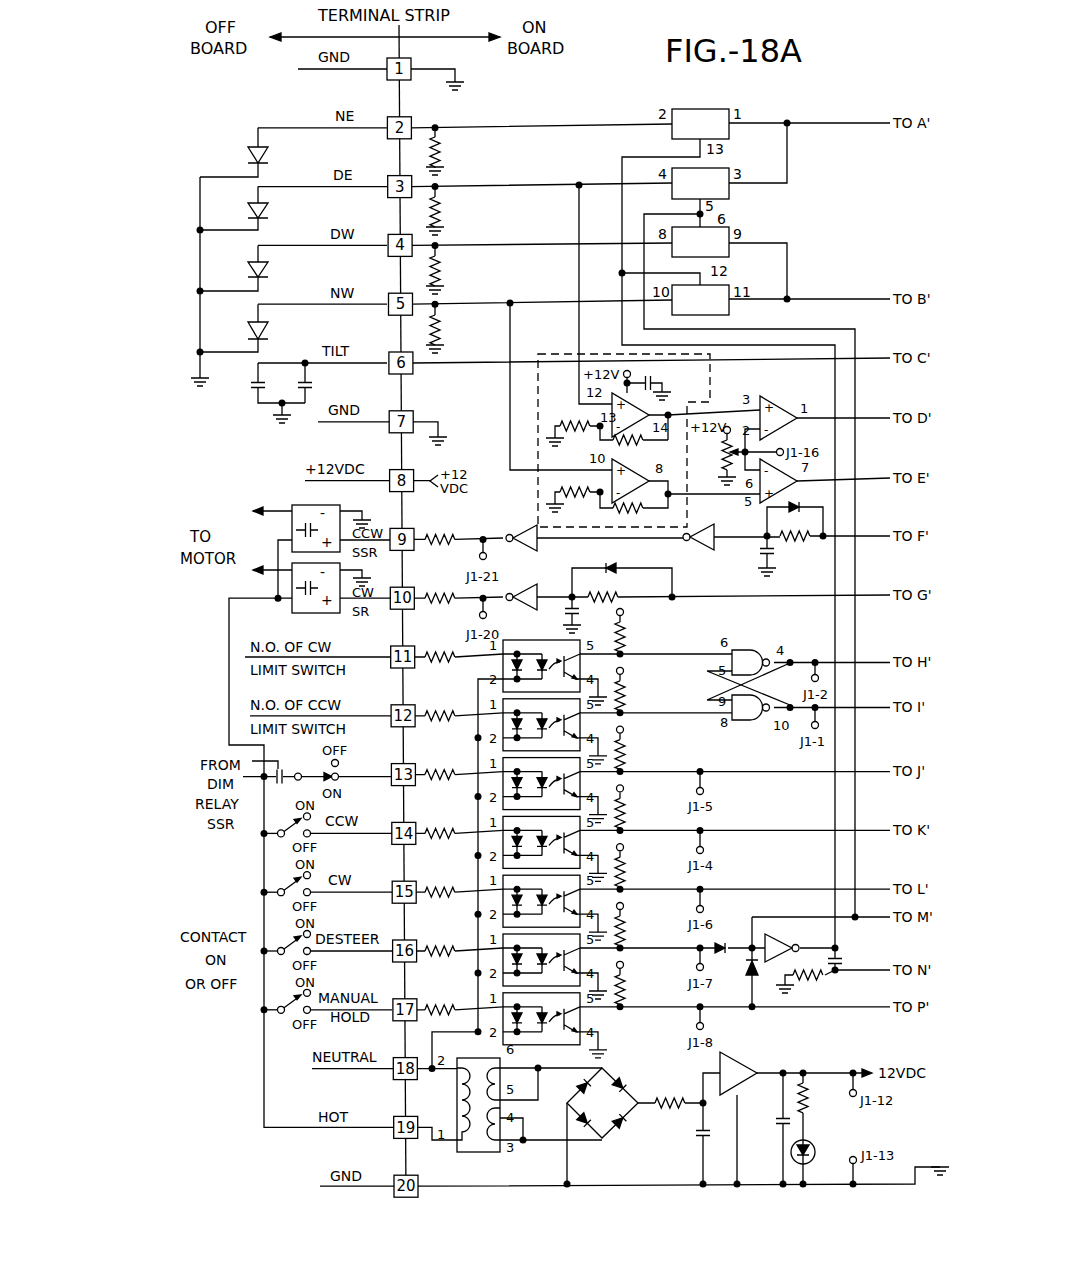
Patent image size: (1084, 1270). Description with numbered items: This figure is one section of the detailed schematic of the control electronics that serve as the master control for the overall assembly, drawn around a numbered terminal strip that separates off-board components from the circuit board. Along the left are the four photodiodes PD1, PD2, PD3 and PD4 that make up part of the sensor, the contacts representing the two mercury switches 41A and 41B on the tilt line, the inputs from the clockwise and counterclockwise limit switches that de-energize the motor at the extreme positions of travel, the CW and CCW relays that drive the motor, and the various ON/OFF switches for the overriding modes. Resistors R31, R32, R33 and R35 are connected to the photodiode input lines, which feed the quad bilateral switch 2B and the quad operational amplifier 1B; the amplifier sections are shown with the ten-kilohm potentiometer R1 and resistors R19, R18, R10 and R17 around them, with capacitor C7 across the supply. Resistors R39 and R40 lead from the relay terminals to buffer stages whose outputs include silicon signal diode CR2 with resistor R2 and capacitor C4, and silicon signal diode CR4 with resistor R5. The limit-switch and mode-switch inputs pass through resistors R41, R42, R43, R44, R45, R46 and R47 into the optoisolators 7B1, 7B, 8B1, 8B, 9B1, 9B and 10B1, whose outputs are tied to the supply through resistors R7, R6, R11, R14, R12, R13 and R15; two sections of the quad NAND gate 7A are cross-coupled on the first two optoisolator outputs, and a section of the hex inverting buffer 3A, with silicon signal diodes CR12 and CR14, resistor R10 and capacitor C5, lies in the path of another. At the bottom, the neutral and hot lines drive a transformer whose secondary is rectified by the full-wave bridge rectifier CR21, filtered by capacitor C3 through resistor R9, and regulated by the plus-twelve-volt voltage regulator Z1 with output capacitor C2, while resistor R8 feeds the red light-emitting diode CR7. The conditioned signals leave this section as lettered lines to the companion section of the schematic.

The mercury switch 41A is at (257, 395).
The mercury switch 41B is at (324, 383).
The photodiode PD1 is at (249, 330).
The photodiode PD2 is at (249, 155).
The photodiode PD3 is at (249, 269).
The photodiode PD4 is at (249, 211).
The resistor 10K R31 is at (451, 152).
The resistor 10K R32 is at (451, 211).
The resistor 10K R33 is at (451, 269).
The resistor 10K R35 is at (451, 328).
The resistor 100 ohm R39 is at (458, 540).
The resistor 100 ohm R40 is at (458, 599).
The resistor 100K R41 is at (459, 657).
The resistor 100K R42 is at (459, 716).
The resistor 100K R43 is at (459, 775).
The resistor 100K R44 is at (459, 834).
The resistor 100K R45 is at (459, 893).
The resistor 100K R46 is at (460, 952).
The resistor 100K R47 is at (460, 1011).
The 10K potentiometer R1 is at (717, 456).
The resistor 100K R2 is at (797, 535).
The resistor 100K R5 is at (614, 590).
The resistor 1MEG R6 is at (641, 688).
The resistor 1MEG R7 is at (641, 629).
The resistor 1K R8 is at (814, 1106).
The resistor R9 is at (670, 1094).
The resistor R10 is at (690, 736).
The resistor 1MEG R11 is at (641, 747).
The resistor 1MEG R12 is at (641, 864).
The resistor 1MEG R13 is at (641, 923).
The resistor 1MEG R14 is at (641, 806).
The resistor 1MEG R15 is at (641, 982).
The resistor 100K R17 is at (634, 510).
The resistor 100K R18 is at (642, 443).
The resistor 10K R19 is at (573, 428).
The capacitor 5uF C2 is at (765, 1128).
The capacitor 470uF C3 is at (680, 1143).
The capacitor 5uF C4 is at (738, 567).
The capacitor 5uF C5 is at (870, 960).
The capacitor 10uF C7 is at (661, 380).
The silicon signal diode CR2 is at (795, 511).
The silicon signal diode CR4 is at (622, 571).
The light emitting diode CR7 is at (816, 1162).
The silicon signal diode CR12 is at (723, 940).
The silicon signal diode CR14 is at (761, 978).
The full wave bridge rectifier CR21 is at (602, 1103).
The +12 VDC voltage regulator Z1 is at (738, 1073).
The quad bilateral switch 2B is at (700, 212).
The quad operational amplifier 1B is at (704, 448).
The quad NAND gate 7A is at (751, 685).
The hex inverting buffer 3A is at (782, 948).
The optoisolator 7B1 is at (555, 672).
The optoisolator 7B is at (555, 731).
The optoisolator 8B1 is at (555, 790).
The optoisolator 8B is at (555, 848).
The optoisolator 9B1 is at (555, 907).
The optoisolator 9B is at (555, 966).
The optoisolator 10B1 is at (555, 1025).